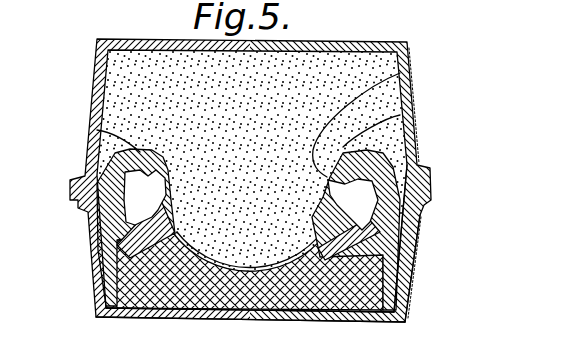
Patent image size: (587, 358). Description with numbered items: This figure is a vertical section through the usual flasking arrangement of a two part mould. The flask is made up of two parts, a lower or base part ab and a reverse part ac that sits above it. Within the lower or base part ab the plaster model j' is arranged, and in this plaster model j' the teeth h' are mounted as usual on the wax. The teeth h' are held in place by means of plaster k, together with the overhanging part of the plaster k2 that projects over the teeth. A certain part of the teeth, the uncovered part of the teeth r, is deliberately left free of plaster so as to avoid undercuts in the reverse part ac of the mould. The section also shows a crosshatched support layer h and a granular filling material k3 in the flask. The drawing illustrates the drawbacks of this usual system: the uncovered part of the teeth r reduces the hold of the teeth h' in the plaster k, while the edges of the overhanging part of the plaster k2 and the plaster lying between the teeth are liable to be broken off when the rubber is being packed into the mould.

The granular filling material k3 is at (185, 82).
The overhanging part of the plaster k2 is at (433, 113).
The teeth h' is at (245, 185).
The plaster k is at (110, 232).
The plaster model j' is at (293, 330).
The uncovered part of the teeth r is at (400, 73).
The reverse part ac is at (417, 143).
The lower or base part ab is at (405, 280).
The crosshatched support layer h is at (244, 286).